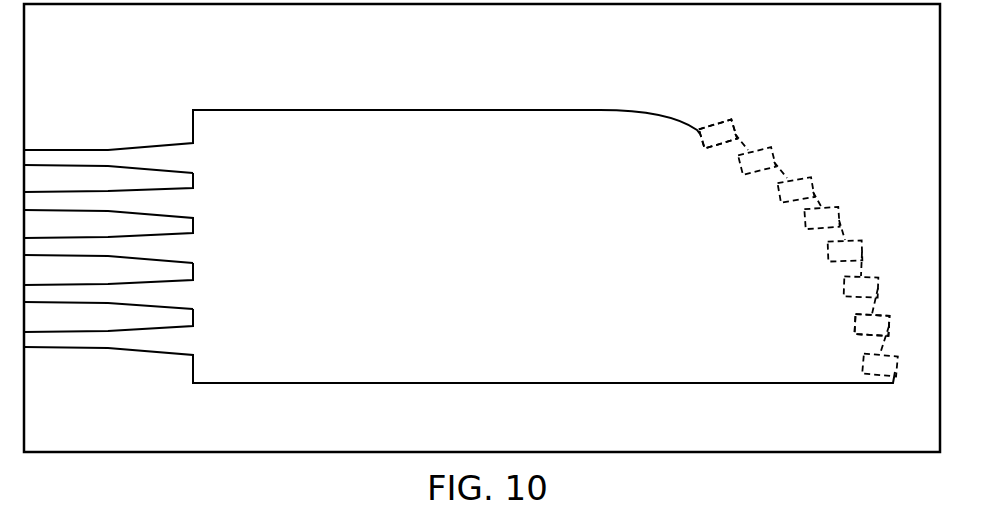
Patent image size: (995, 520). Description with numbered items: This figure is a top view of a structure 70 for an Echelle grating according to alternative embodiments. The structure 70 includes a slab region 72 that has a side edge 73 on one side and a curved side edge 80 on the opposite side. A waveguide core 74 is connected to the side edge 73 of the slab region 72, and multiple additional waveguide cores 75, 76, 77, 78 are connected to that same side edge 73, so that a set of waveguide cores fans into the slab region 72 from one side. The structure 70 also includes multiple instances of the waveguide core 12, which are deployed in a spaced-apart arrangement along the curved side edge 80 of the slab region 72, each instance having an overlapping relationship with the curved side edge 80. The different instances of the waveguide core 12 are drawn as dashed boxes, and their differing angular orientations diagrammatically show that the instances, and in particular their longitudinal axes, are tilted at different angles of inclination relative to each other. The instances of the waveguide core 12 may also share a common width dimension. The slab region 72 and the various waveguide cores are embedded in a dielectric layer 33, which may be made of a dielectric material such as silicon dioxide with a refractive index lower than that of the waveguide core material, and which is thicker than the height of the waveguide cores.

The structure 70 is at (126, 66).
The slab region 72 is at (468, 135).
The side edge 73 is at (194, 229).
The waveguide core 74 is at (108, 160).
The waveguide core 75 is at (98, 205).
The waveguide core 76 is at (105, 245).
The waveguide core 77 is at (133, 293).
The waveguide core 78 is at (157, 333).
The dielectric layer 33 is at (262, 427).
The curved side edge 80 is at (787, 170).
The waveguide core 12 is at (715, 112).